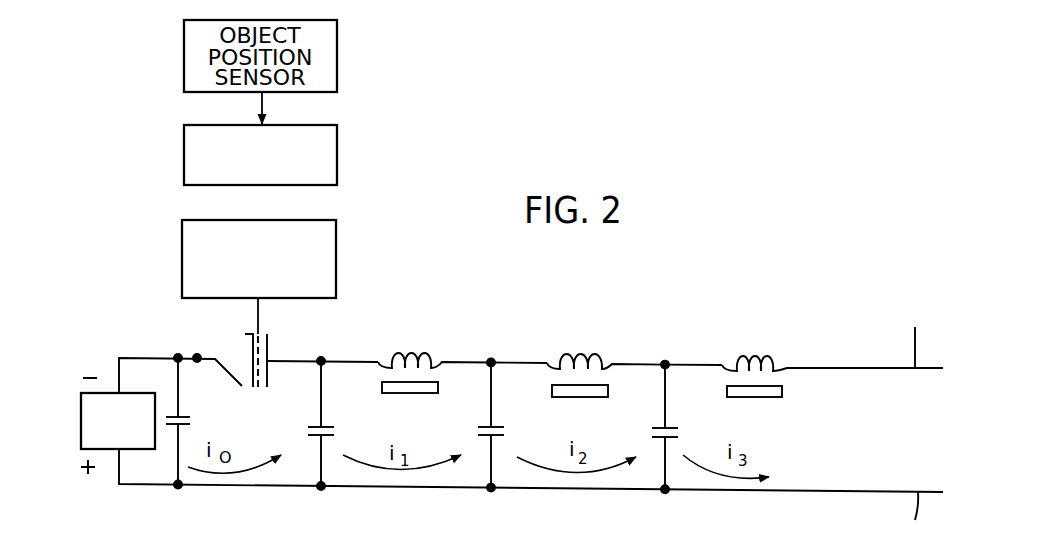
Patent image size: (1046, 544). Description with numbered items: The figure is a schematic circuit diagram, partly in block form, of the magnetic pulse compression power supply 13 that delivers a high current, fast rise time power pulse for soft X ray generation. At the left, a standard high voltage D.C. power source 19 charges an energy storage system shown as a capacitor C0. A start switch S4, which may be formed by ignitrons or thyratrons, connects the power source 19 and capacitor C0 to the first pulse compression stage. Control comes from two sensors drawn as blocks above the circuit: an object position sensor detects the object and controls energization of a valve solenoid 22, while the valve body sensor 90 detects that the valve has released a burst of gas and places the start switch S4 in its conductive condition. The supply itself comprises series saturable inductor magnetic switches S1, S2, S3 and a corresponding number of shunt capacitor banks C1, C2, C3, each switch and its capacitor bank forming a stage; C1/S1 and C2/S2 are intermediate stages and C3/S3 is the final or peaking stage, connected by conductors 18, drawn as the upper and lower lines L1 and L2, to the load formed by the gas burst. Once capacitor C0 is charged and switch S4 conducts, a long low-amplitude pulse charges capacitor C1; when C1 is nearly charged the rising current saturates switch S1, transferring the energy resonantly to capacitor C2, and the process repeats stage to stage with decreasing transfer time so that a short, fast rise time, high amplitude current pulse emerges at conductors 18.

The magnetic pulse compression power supply 13 is at (605, 396).
The conductors 18 is at (918, 423).
The high voltage D.C. power source 19 is at (80, 423).
The valve solenoid 22 is at (337, 153).
The valve body sensor 90 is at (336, 261).
The capacitor C0 is at (184, 417).
The capacitor C1 is at (327, 424).
The capacitor C2 is at (497, 424).
The capacitor C3 is at (677, 425).
The saturable inductor magnetic switch S1 is at (403, 393).
The saturable inductor magnetic switch S2 is at (575, 397).
The saturable inductor magnetic switch S3 is at (758, 397).
The start switch S4 is at (247, 392).
The line L1 is at (818, 368).
The line L2 is at (837, 508).